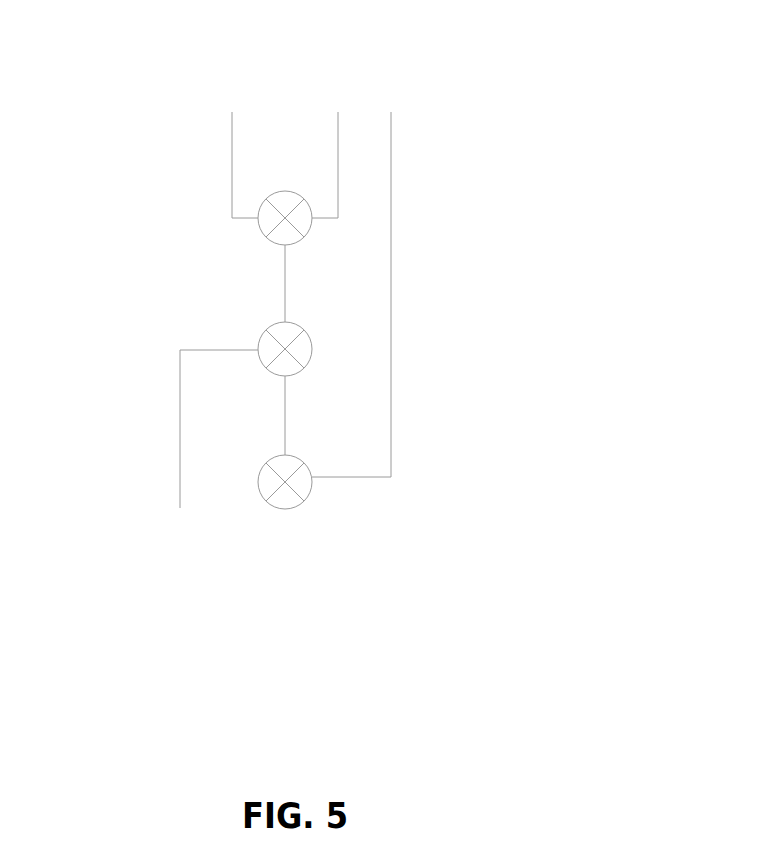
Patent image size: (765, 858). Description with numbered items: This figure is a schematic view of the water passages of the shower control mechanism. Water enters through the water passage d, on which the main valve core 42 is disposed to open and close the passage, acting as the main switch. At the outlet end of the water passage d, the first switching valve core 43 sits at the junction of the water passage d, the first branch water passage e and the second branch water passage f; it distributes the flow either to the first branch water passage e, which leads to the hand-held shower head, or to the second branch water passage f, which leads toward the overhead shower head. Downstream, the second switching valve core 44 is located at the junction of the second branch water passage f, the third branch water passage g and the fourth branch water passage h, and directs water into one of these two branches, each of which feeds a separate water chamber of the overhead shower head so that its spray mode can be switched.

The main valve core 42 is at (310, 492).
The first switching valve core 43 is at (260, 340).
The second switching valve core 44 is at (260, 232).
The water passage d is at (285, 417).
The first branch water passage e is at (180, 430).
The second branch water passage f is at (285, 283).
The third branch water passage g is at (232, 157).
The fourth branch water passage h is at (338, 155).